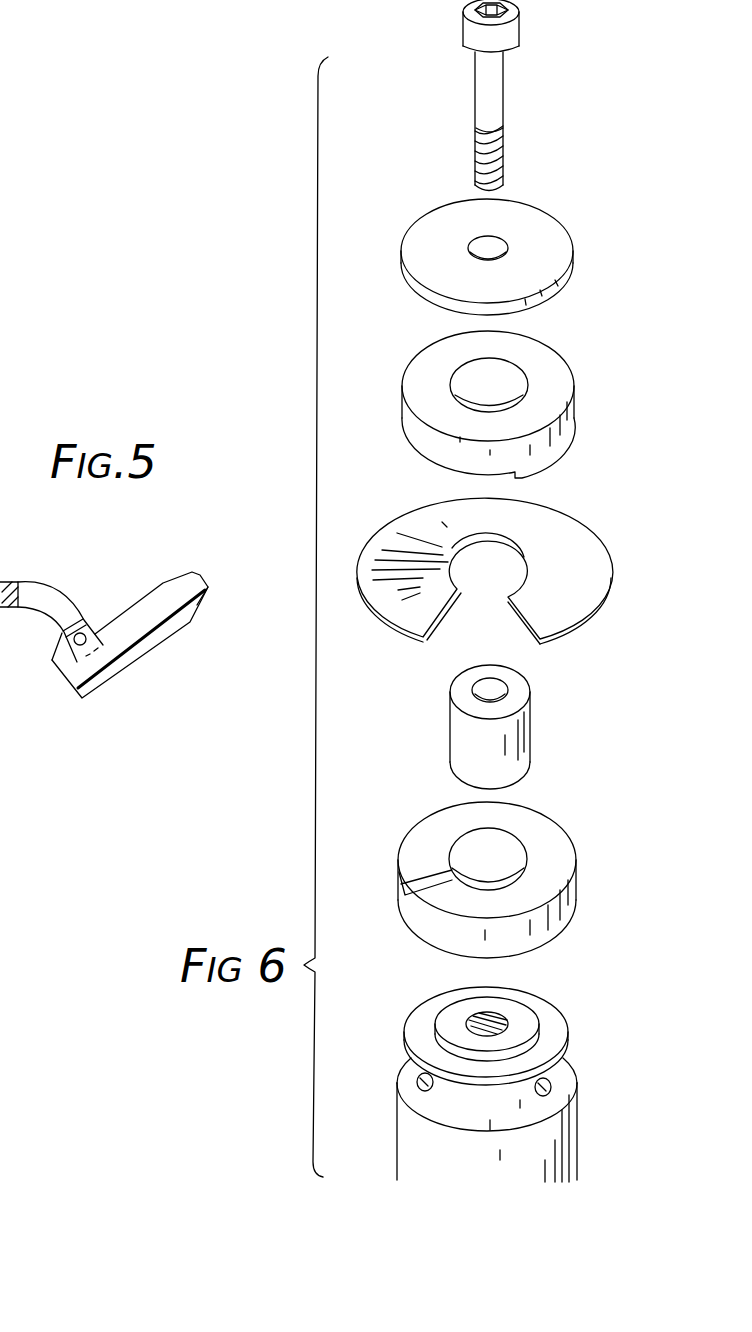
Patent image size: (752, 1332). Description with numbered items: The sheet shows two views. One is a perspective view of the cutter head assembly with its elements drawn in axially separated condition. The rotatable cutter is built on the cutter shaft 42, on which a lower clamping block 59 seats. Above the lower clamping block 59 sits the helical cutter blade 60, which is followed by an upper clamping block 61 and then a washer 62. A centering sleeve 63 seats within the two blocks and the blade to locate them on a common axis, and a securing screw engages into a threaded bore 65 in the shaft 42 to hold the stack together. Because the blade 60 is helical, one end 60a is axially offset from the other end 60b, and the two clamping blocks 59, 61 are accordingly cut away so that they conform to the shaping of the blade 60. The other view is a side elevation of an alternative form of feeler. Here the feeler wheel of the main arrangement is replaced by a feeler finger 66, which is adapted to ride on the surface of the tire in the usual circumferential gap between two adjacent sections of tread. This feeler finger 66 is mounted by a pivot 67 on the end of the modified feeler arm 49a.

In FIG. 6, the cutter shaft 42 is at (556, 1031).
In FIG. 5, the modified feeler arm 49a is at (40, 590).
In FIG. 6, the lower clamping block 59 is at (568, 900).
In FIG. 6, the helical cutter blade 60 is at (597, 578).
In FIG. 6, the end of blade 60a is at (445, 628).
In FIG. 6, the end of blade 60b is at (508, 616).
In FIG. 6, the upper clamping block 61 is at (557, 393).
In FIG. 6, the washer 62 is at (560, 247).
In FIG. 6, the centering sleeve 63 is at (492, 96).
In FIG. 6, the threaded bore 65 is at (477, 1008).
In FIG. 5, the feeler finger 66 is at (178, 601).
In FIG. 5, the pivot 67 is at (72, 641).